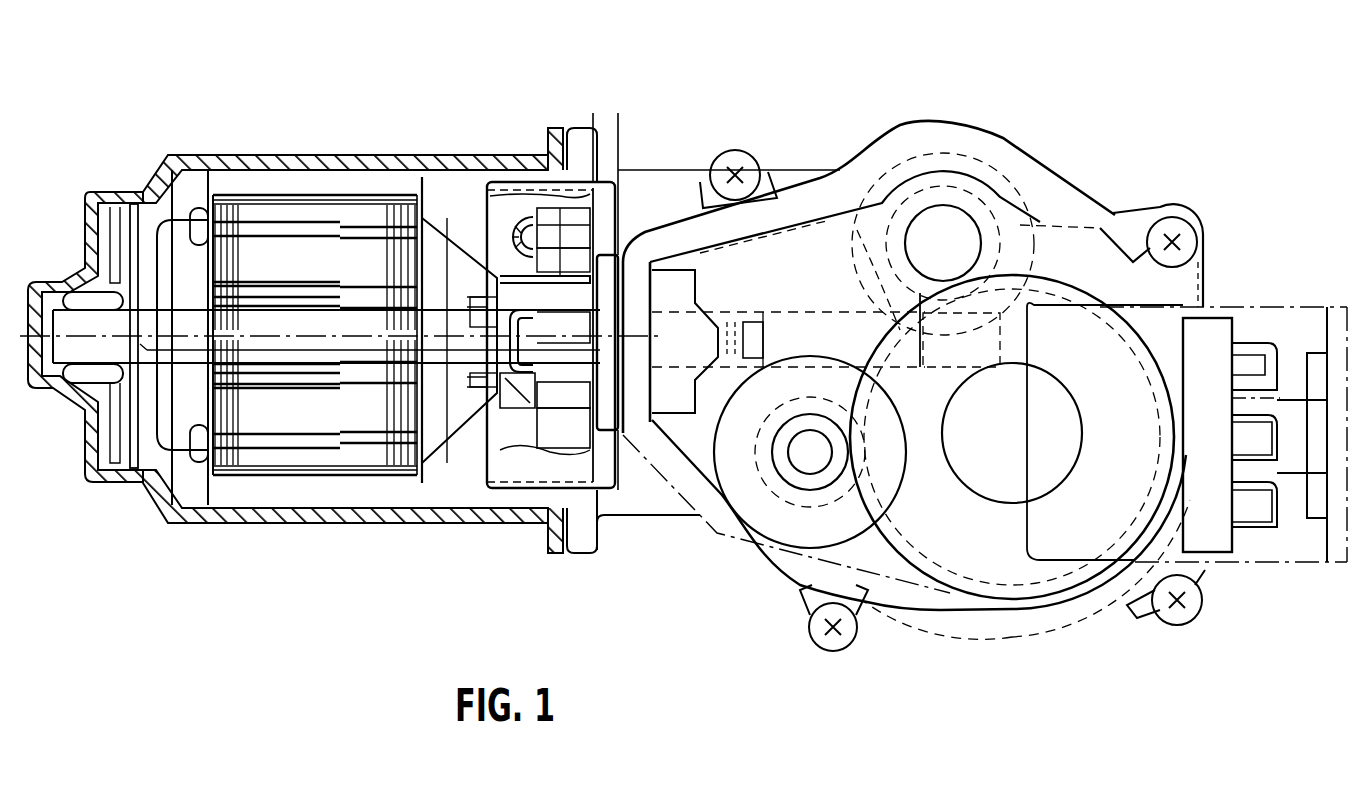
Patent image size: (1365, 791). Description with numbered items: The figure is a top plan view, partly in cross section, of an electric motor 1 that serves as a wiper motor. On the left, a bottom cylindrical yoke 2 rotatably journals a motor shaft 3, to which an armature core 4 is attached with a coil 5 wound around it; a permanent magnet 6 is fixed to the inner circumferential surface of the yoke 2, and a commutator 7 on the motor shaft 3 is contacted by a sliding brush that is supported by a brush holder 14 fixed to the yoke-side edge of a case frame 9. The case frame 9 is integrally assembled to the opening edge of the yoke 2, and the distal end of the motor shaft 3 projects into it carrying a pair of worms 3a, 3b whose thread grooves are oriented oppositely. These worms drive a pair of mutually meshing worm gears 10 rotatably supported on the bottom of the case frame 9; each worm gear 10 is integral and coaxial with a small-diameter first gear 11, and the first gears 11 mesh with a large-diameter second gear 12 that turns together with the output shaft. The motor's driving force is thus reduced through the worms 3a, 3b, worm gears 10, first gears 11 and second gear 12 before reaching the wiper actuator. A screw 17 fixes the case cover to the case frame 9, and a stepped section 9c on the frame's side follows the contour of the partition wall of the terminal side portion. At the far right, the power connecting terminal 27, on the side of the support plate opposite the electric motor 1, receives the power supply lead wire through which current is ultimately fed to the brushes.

The electric motor 1 is at (352, 118).
The yoke 2 is at (458, 522).
The motor shaft 3 is at (330, 345).
The worm 3a is at (845, 300).
The worm 3b is at (952, 330).
The armature core 4 is at (400, 445).
The coil 5 is at (268, 445).
The permanent magnet 6 is at (393, 158).
The commutator 7 is at (532, 395).
The case frame 9 is at (1147, 208).
The stepped section 9c is at (700, 213).
The worm gear 10 is at (1005, 208).
The first gear 11 is at (790, 495).
The second gear 12 is at (1078, 592).
The brush holder 14 is at (613, 168).
The screw 17 is at (825, 655).
The power connecting terminal 27 is at (1263, 528).